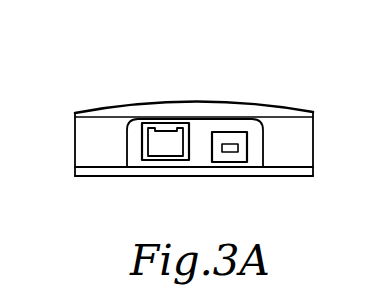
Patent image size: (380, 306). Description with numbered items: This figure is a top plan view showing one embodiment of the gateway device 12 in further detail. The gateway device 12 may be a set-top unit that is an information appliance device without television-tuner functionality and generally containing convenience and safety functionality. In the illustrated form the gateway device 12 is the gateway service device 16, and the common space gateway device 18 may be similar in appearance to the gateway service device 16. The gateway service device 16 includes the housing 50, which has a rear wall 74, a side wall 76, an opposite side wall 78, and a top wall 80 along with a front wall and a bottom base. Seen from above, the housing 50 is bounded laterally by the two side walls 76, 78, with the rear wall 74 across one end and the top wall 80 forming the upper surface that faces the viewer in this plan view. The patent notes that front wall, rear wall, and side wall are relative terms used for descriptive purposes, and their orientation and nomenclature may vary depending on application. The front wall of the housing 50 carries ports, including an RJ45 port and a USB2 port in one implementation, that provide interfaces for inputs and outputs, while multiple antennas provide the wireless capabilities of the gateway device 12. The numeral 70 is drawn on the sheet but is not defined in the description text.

The gateway device 12 is at (194, 127).
The gateway service device 16 is at (166, 157).
The common space gateway device 18 is at (231, 154).
The housing 50 is at (80, 159).
The right side wall 70 is at (303, 155).
The rear wall 74 is at (315, 128).
The side wall 76 is at (75, 138).
The side wall 78 is at (197, 102).
The top wall 80 is at (93, 177).